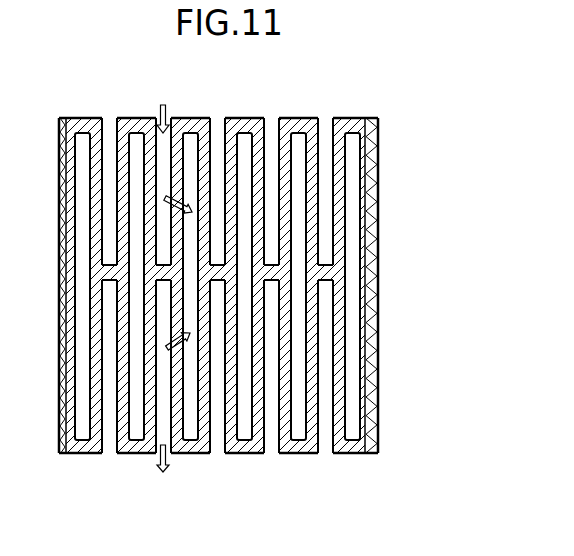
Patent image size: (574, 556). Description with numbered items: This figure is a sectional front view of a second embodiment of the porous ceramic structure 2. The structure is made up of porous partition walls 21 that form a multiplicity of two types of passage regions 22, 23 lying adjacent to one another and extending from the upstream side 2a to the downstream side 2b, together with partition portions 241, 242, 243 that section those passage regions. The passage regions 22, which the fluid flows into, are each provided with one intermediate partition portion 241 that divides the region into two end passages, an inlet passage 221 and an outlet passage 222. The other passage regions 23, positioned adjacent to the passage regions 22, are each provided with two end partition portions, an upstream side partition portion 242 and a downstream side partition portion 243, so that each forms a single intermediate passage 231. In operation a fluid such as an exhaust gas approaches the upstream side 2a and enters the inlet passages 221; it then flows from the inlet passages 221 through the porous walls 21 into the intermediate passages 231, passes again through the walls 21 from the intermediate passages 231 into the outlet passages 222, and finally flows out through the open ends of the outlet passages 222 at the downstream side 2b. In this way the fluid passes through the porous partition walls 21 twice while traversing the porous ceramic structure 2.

The porous ceramic structure 2 is at (372, 117).
The upstream side 2a is at (85, 118).
The downstream side 2b is at (70, 454).
The porous partition walls 21 is at (340, 193).
The passage regions 22 is at (271, 131).
The passage regions 23 is at (245, 131).
The inlet passage 221 is at (330, 155).
The outlet passage 222 is at (290, 372).
The intermediate passage 231 is at (137, 375).
The intermediate partition portion 241 is at (325, 271).
The upstream side partition portion 242 is at (135, 125).
The downstream side partition portion 243 is at (130, 453).